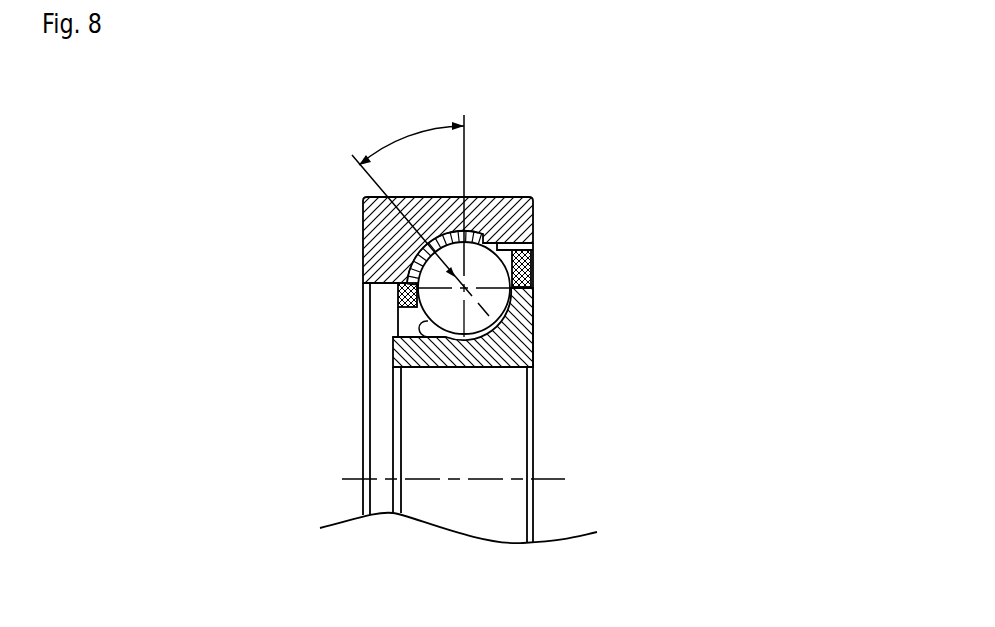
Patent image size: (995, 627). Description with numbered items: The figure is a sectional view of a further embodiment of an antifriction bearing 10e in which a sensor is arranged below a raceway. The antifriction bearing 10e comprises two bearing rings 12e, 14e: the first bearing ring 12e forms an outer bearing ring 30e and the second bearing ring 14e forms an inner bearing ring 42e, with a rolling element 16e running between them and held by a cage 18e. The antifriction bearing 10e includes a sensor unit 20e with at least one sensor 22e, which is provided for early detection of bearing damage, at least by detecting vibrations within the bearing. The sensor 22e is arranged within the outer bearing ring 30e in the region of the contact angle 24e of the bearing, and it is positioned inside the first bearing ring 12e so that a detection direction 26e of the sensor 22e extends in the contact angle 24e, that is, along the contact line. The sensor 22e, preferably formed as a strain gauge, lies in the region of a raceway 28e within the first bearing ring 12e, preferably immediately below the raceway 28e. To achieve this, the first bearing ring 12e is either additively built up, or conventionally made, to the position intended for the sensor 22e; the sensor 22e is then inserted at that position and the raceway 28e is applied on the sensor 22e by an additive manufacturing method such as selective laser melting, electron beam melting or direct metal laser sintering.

The antifriction bearing 10e is at (763, 162).
The first bearing ring 12e is at (536, 240).
The outer bearing ring 30e is at (510, 220).
The second bearing ring 14e is at (525, 330).
The inner bearing ring 42e is at (463, 327).
The rolling element (ball) 16e is at (495, 303).
The cage 18e is at (398, 305).
The sensor unit 20e is at (407, 253).
The sensor 22e is at (432, 241).
The contact angle 24e is at (412, 133).
The detection direction 26e is at (428, 326).
The raceway 28e is at (460, 233).